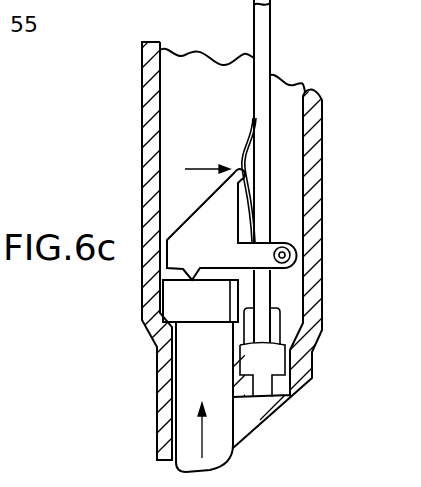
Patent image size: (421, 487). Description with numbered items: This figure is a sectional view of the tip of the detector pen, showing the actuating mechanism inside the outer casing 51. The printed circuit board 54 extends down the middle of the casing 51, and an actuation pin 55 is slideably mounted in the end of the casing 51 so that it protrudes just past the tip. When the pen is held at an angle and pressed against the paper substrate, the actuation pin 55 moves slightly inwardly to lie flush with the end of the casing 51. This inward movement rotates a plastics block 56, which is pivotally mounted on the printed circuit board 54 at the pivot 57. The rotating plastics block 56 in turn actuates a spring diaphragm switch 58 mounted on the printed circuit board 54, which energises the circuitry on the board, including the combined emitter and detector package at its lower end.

The outer casing 51 is at (148, 166).
The printed circuit board 54 is at (263, 29).
The actuation pin 55 is at (186, 430).
The plastics block 56 is at (257, 248).
The pivot 57 is at (298, 257).
The spring diaphragm switch 58 is at (246, 168).